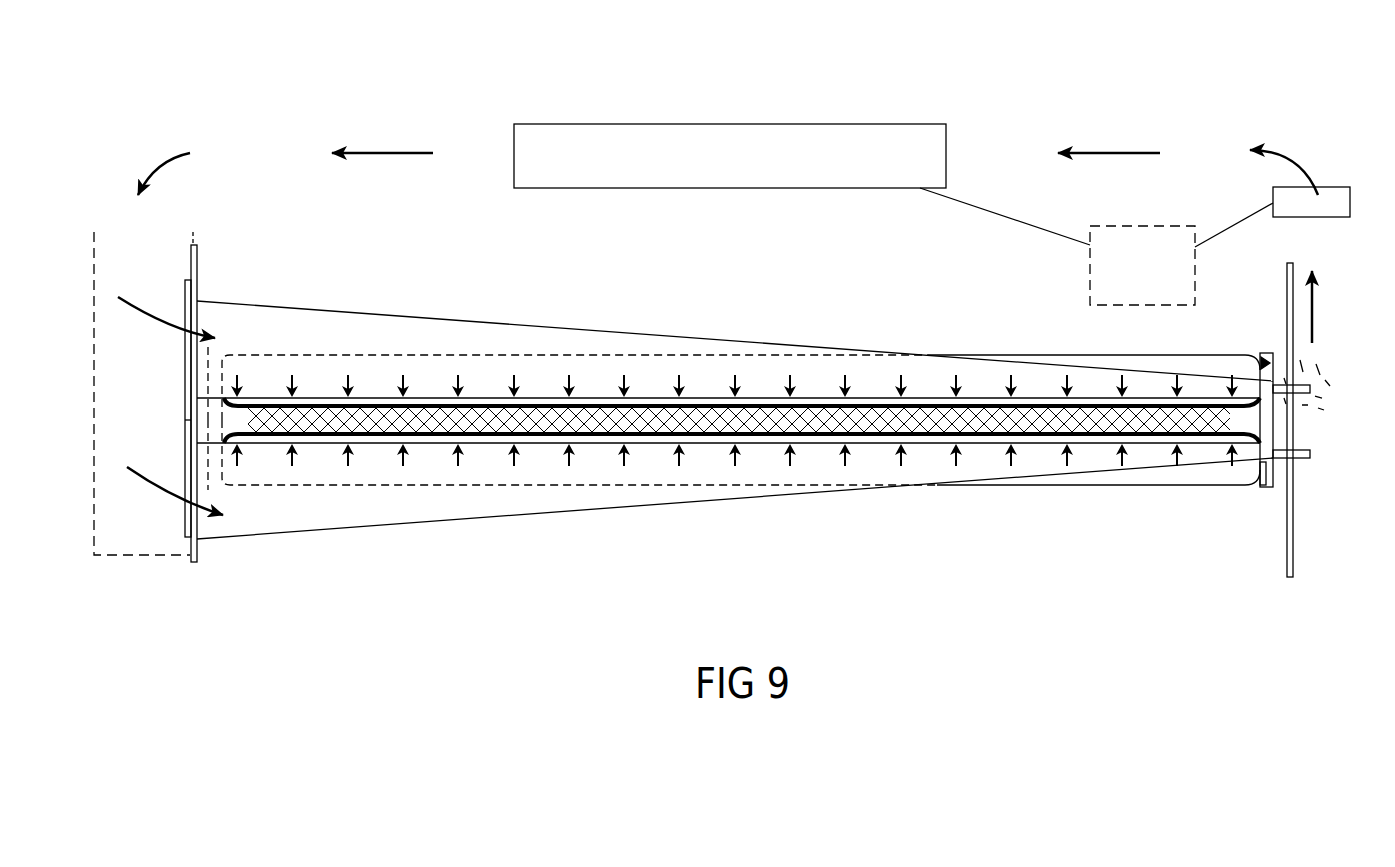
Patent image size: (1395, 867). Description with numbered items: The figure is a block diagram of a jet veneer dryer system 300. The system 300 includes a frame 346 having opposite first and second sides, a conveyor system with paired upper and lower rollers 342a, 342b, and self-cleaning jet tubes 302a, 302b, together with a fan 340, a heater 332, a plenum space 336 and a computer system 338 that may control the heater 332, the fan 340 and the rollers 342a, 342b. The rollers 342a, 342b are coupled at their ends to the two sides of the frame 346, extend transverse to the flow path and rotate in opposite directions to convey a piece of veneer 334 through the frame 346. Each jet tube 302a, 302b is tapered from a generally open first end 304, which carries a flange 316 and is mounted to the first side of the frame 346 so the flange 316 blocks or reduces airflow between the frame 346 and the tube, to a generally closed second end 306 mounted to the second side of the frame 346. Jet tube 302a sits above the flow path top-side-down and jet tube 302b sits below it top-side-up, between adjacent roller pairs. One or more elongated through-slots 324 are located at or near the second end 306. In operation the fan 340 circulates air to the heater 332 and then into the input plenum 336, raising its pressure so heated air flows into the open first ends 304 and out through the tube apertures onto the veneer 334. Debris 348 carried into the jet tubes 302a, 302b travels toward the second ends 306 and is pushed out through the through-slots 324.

The jet veneer dryer system 300 is at (175, 97).
The jet tube 302a is at (340, 325).
The jet tube 302b is at (355, 512).
The first end 304 is at (180, 315).
The second end 306 is at (1264, 362).
The flange 316 is at (192, 560).
The through-slot 324 is at (1262, 480).
The heater 332 is at (709, 174).
The piece of veneer 334 is at (715, 416).
The plenum space 336 is at (133, 523).
The computer system 338 is at (1117, 284).
The fan 340 is at (1330, 197).
The upper roller 342a is at (1100, 358).
The lower roller 342b is at (1185, 480).
The frame 346 is at (195, 289).
The debris 348 is at (1313, 402).